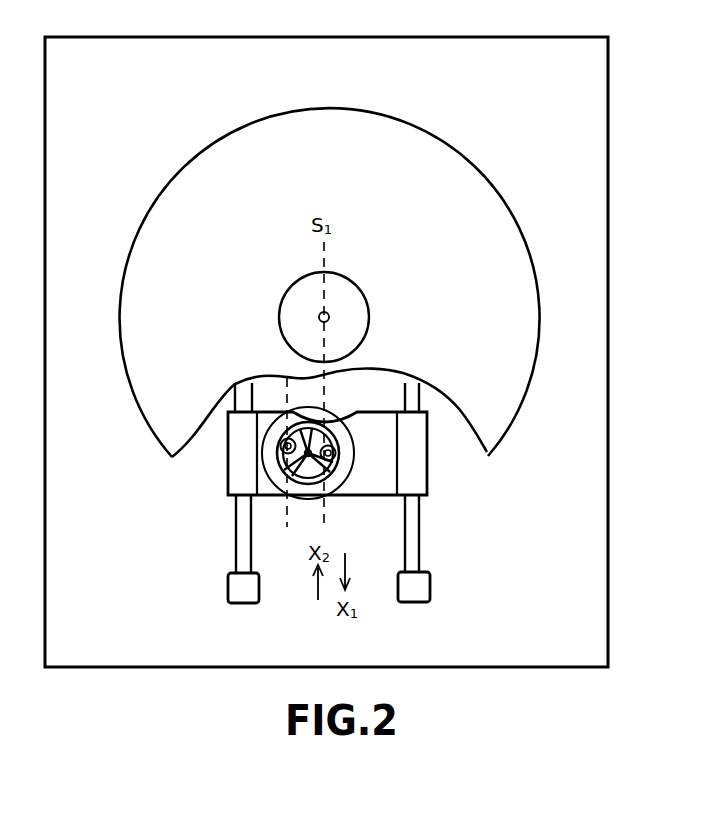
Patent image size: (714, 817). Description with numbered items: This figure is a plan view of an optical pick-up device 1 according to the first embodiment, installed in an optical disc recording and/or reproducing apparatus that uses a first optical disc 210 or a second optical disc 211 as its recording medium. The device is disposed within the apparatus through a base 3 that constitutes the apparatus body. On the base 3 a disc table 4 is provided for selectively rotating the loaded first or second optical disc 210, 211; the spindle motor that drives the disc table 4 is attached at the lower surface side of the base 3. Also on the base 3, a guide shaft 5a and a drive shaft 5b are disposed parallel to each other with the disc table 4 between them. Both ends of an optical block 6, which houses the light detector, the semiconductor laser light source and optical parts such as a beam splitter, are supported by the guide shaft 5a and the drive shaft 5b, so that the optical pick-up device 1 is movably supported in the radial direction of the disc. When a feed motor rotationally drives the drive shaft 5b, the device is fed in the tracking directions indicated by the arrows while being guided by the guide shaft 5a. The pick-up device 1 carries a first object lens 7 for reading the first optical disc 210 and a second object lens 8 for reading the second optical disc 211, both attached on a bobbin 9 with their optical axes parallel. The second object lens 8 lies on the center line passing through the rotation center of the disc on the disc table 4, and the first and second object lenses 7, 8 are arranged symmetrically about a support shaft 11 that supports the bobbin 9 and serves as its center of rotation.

The optical pick-up device 1 is at (231, 451).
The base 3 is at (580, 165).
The disc table 4 is at (356, 315).
The guide shaft 5a is at (415, 523).
The drive shaft 5b is at (240, 522).
The optical block 6 is at (422, 475).
The first object lens 7 is at (283, 428).
The second object lens 8 is at (335, 445).
The bobbin 9 is at (334, 462).
The support shaft 11 is at (285, 458).
The first optical disc 210 is at (330, 277).
The second optical disc 211 is at (425, 140).